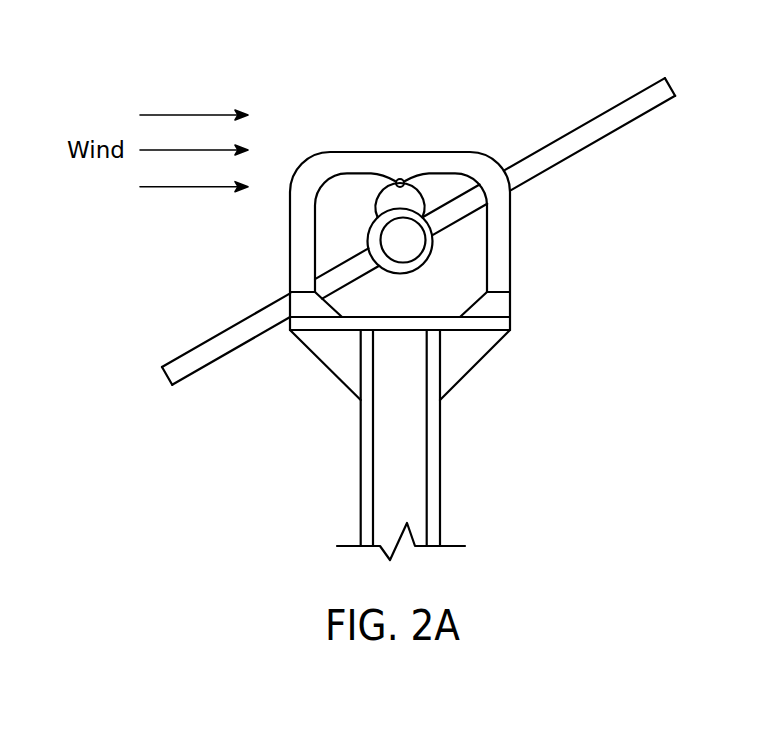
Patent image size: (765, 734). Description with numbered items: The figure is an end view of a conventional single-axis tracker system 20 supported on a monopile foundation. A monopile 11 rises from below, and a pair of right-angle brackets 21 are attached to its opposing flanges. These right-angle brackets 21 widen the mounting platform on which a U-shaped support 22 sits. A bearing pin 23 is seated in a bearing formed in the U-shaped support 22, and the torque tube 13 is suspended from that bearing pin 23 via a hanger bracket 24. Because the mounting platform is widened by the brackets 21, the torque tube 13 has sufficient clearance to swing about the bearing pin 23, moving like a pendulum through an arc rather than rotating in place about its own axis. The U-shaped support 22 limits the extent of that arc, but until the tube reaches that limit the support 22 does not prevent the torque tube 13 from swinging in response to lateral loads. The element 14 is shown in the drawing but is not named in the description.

The monopile 11 is at (361, 472).
The torque tube 13 is at (400, 240).
The arm 14 is at (605, 135).
The tracker system 20 is at (300, 102).
The right-angle brackets 21 is at (325, 365).
The U-shaped support 22 is at (287, 243).
The bearing pin 23 is at (399, 179).
The hanger bracket 24 is at (431, 209).